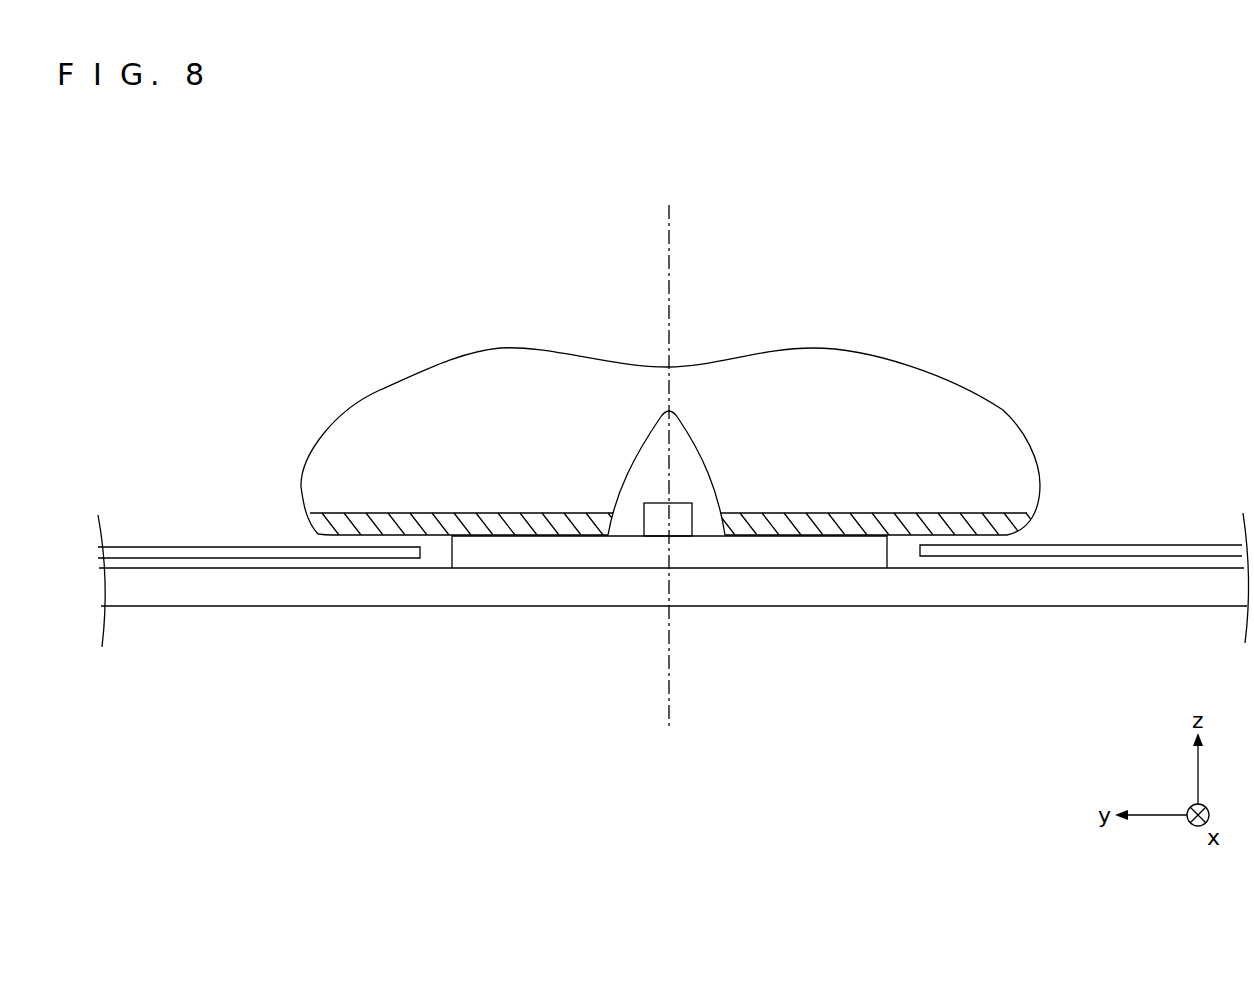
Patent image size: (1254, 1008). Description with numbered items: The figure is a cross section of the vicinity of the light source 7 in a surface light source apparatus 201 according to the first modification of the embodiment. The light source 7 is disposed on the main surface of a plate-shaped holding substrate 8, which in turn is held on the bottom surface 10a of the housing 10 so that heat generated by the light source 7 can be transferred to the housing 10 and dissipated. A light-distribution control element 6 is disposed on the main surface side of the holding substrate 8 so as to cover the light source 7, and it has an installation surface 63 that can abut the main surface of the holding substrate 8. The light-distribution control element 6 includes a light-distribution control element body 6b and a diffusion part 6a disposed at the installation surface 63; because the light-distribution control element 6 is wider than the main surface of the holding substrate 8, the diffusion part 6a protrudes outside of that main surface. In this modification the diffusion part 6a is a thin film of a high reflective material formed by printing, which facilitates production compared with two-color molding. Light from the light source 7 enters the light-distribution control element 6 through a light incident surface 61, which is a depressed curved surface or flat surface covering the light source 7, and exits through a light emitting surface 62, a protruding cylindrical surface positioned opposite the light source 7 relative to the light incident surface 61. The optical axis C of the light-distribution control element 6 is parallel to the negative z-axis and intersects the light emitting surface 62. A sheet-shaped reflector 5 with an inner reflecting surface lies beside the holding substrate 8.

The surface light source apparatus 201 is at (219, 243).
The optical axis C is at (673, 250).
The housing 10 is at (193, 587).
The bottom surface 10a is at (172, 568).
The reflector 5 is at (1195, 547).
The holding substrate 8 is at (507, 558).
The light source 7 is at (681, 503).
The light-distribution control element 6 is at (341, 388).
The diffusion part 6a is at (827, 525).
The light-distribution control element body 6b is at (963, 400).
The light incident surface 61 is at (717, 506).
The light emitting surface 62 is at (847, 347).
The installation surface 63 is at (550, 538).